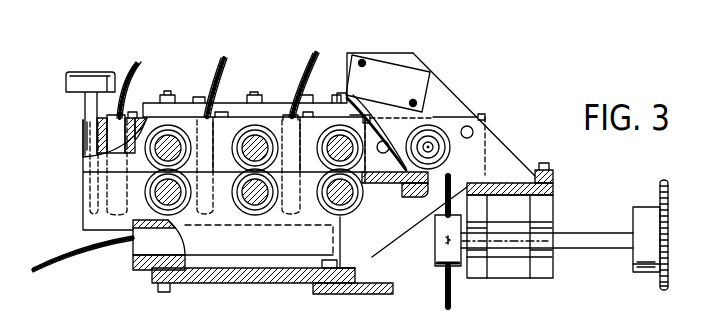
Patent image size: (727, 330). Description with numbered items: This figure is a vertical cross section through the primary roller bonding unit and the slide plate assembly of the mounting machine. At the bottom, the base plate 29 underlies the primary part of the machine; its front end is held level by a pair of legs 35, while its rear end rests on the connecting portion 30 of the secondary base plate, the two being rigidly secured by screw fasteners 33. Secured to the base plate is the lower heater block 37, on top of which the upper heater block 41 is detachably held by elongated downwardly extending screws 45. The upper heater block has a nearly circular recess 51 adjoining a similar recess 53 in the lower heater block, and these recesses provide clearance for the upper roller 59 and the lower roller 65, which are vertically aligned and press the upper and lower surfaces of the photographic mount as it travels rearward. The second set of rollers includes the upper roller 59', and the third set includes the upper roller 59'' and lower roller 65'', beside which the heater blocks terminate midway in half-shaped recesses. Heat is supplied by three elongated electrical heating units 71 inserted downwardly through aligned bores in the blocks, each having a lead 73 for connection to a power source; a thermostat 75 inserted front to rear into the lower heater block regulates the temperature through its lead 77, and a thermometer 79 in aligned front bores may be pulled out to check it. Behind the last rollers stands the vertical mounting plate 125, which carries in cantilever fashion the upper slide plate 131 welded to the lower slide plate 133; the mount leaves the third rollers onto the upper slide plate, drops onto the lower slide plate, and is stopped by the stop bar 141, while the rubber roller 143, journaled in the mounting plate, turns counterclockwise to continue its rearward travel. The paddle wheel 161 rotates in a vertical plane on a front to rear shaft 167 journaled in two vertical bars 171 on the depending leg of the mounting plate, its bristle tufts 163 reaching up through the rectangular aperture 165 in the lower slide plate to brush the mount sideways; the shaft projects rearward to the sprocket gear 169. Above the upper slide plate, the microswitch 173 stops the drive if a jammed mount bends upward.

The thermometer 79 is at (75, 78).
The upper heater block 41 is at (83, 133).
The lower heater block 37 is at (83, 194).
The screws 45 is at (134, 112).
The lead 73 is at (210, 92).
The roller 59 is at (171, 133).
The roller 59' is at (256, 138).
The roller 59'' is at (340, 138).
The recess 51 is at (190, 148).
The recess 53 is at (190, 192).
The roller 65 is at (218, 198).
The roller 65'' is at (351, 201).
The electrical heating units 71 is at (215, 233).
The thermostat 75 is at (159, 245).
The lead 77 is at (88, 260).
The legs 35 is at (160, 288).
The base plate 29 is at (203, 283).
The screw fasteners 33 is at (319, 295).
The connecting portion 30 is at (367, 295).
The upper slide plate 131 is at (376, 183).
The rectangular aperture 165 is at (430, 204).
The paddle wheel 161 is at (435, 258).
The tufts 163 is at (452, 292).
The bars 171 is at (483, 272).
The lower slide plate 133 is at (510, 236).
The stop bar 141 is at (552, 173).
The mounting plate 125 is at (503, 145).
The rubber roller 143 is at (429, 128).
The microswitch 173 is at (382, 72).
The shaft 167 is at (583, 243).
The sprocket gear 169 is at (668, 224).